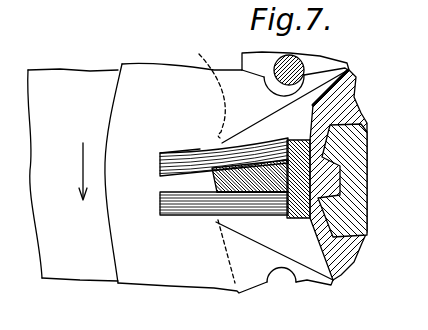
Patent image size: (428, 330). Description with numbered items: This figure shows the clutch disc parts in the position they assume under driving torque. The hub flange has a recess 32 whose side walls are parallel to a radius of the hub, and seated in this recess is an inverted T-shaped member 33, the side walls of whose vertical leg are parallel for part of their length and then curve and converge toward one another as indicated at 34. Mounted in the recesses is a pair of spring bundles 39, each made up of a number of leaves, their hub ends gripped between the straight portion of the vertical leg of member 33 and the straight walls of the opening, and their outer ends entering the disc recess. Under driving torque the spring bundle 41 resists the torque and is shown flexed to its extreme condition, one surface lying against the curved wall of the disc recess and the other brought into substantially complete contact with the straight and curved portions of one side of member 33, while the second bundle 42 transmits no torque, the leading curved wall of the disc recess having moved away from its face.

The recess 32 is at (199, 54).
The inverted T-shaped member 33 is at (268, 186).
The curved converging walls 34 is at (221, 194).
The spring bundles 39 is at (188, 157).
The spring bundle 41 is at (173, 160).
The second bundle 42 is at (190, 203).